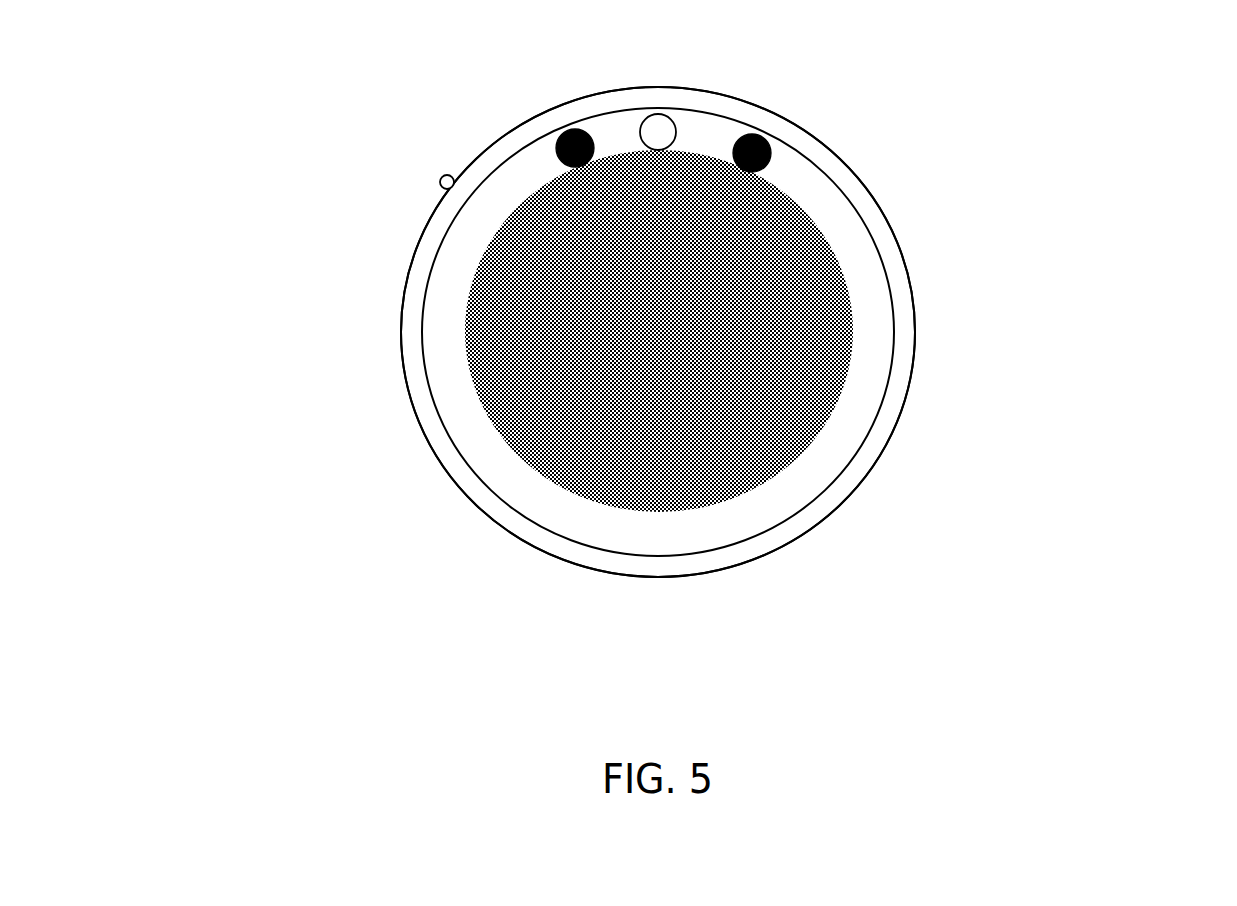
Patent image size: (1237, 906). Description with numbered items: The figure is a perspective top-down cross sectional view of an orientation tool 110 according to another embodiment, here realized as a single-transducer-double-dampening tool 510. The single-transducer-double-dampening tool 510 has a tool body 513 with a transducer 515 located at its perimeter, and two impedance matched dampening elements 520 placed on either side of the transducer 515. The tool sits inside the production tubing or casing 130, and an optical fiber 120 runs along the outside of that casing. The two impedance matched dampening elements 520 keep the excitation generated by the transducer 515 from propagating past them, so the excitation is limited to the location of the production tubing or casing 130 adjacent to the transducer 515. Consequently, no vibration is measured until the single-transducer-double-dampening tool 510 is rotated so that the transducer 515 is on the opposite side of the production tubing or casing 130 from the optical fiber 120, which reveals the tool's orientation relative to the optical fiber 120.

The single-transducer-double-dampening tool 510 is at (804, 308).
The orientation tool 110 is at (1115, 150).
The production tubing or casing 130 is at (895, 410).
The tool body 513 is at (580, 352).
The transducer 515 is at (652, 113).
The impedance matched dampening elements 520 is at (560, 133).
The optical fiber 120 is at (440, 179).